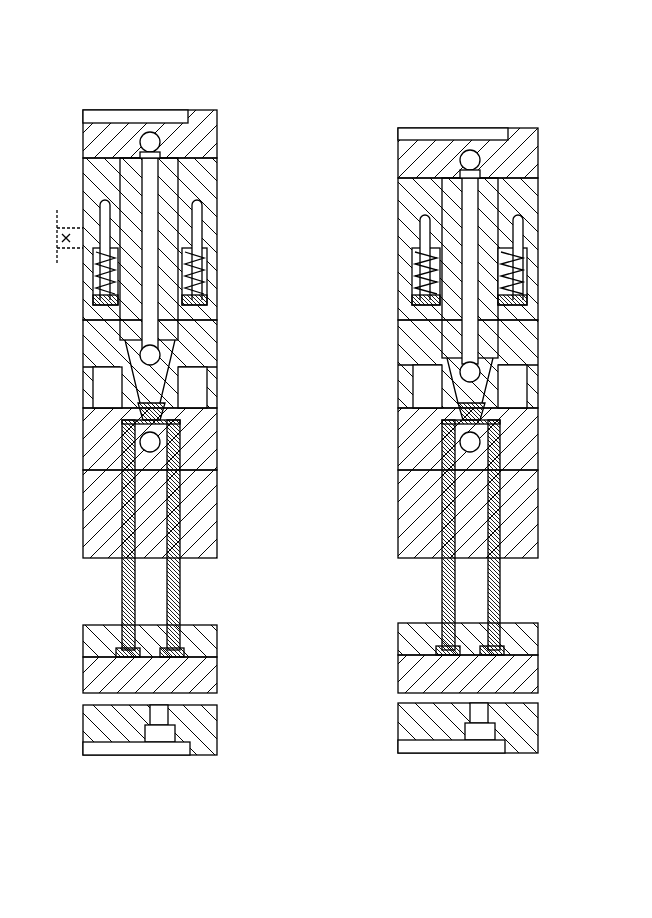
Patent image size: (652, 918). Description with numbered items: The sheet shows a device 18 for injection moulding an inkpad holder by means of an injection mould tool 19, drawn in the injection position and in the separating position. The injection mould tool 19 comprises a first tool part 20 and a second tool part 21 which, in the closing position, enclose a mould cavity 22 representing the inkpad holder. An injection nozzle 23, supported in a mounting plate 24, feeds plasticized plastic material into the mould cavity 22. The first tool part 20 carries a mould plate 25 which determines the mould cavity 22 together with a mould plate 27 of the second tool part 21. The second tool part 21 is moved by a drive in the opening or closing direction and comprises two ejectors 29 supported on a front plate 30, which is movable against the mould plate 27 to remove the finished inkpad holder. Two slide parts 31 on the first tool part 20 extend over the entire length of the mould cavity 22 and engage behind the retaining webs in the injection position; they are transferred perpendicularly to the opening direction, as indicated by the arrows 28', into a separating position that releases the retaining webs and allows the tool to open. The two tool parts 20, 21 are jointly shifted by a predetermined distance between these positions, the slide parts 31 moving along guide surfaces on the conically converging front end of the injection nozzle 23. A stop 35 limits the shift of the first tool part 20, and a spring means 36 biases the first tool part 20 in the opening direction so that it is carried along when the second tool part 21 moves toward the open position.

In FIG. 6, the device 18 is at (167, 434).
In FIG. 5, the device 18 is at (558, 102).
In FIG. 6, the injection mould tool 19 is at (229, 186).
In FIG. 5, the injection mould tool 19 is at (383, 200).
In FIG. 6, the first tool part 20 is at (226, 327).
In FIG. 5, the first tool part 20 is at (382, 332).
In FIG. 6, the second tool part 21 is at (227, 433).
In FIG. 5, the second tool part 21 is at (393, 433).
In FIG. 5, the mould cavity 22 is at (503, 445).
In FIG. 6, the injection nozzle 23 is at (168, 360).
In FIG. 5, the injection nozzle 23 is at (405, 366).
In FIG. 6, the mounting plate 24 is at (192, 120).
In FIG. 5, the mounting plate 24 is at (517, 148).
In FIG. 6, the mould plate 25 is at (174, 352).
In FIG. 5, the mould plate 25 is at (405, 345).
In FIG. 6, the mould plate 27 is at (218, 469).
In FIG. 5, the mould plate 27 is at (398, 468).
In FIG. 6, the arrows 28' is at (148, 387).
In FIG. 5, the arrows 28' is at (513, 368).
In FIG. 6, the ejectors 29 is at (181, 590).
In FIG. 5, the ejectors 29 is at (454, 583).
In FIG. 5, the front plate 30 is at (540, 688).
In FIG. 5, the slide parts 31 is at (413, 393).
In FIG. 6, the stop 35 is at (95, 299).
In FIG. 6, the spring means 36 is at (200, 243).
In FIG. 5, the spring means 36 is at (412, 252).